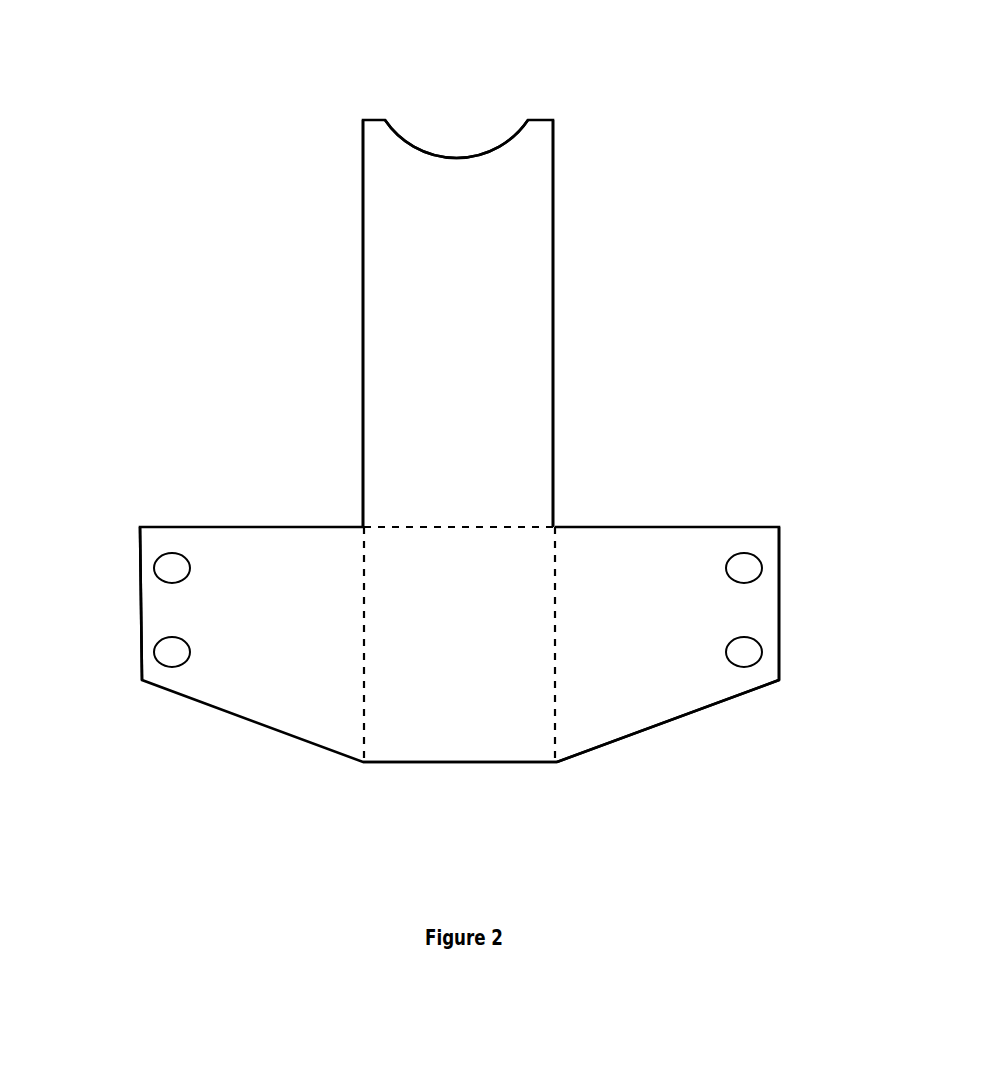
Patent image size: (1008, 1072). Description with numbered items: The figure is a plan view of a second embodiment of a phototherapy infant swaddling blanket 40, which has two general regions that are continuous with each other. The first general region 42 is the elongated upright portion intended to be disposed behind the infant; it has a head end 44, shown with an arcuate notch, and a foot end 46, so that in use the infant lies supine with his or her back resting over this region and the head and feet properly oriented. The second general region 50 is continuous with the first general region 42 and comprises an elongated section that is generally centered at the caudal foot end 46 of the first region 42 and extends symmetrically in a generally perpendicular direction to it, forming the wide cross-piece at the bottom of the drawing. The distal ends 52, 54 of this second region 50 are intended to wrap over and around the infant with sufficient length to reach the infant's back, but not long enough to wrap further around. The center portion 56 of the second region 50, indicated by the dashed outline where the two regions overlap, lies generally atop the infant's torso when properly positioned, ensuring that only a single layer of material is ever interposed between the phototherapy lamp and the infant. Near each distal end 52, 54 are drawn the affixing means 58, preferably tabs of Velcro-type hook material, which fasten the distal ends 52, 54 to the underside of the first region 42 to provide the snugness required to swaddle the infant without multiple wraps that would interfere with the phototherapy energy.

The swaddling blanket 40 is at (436, 150).
The first general region 42 is at (481, 389).
The head end 44 is at (466, 181).
The foot end 46 is at (489, 489).
The second general region 50 is at (673, 717).
The distal end 52 is at (159, 607).
The distal end 54 is at (752, 606).
The center portion 56 is at (450, 645).
The affixing means 58 is at (151, 562).